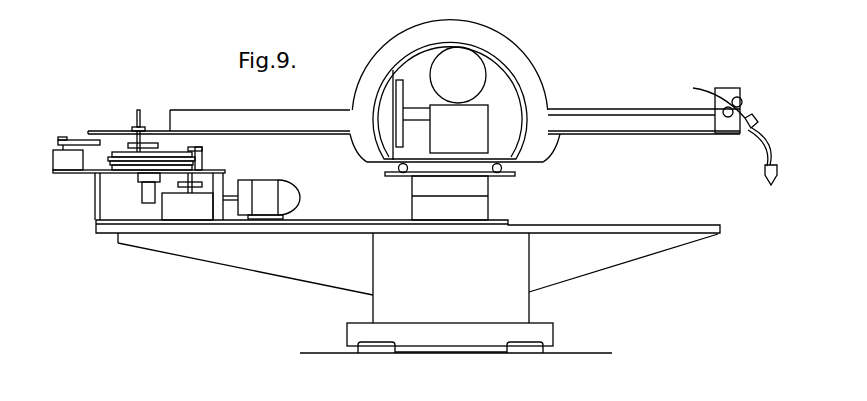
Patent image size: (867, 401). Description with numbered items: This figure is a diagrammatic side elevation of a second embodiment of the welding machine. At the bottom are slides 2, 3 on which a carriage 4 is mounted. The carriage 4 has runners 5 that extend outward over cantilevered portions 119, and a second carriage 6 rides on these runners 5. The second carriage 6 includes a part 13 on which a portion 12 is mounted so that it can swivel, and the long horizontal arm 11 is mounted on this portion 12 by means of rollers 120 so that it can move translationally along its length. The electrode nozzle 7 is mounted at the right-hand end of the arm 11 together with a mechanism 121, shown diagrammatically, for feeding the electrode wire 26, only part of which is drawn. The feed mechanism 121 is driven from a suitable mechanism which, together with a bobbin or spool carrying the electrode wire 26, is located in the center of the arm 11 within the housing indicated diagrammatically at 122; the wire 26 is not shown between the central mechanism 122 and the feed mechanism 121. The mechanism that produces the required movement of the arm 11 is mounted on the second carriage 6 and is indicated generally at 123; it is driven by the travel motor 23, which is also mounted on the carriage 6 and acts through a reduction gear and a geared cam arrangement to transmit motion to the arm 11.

The slide 2 is at (373, 352).
The slide 3 is at (522, 351).
The carriage 4 is at (523, 303).
The runners 5 is at (597, 225).
The second carriage 6 is at (111, 229).
The electrode nozzle 7 is at (760, 143).
The arm 11 is at (650, 134).
The portion 12 is at (414, 193).
The part of the carriage 13 is at (486, 205).
The travel motor 23 is at (273, 183).
The electrode wire 26 is at (698, 88).
The cantilevered portions 119 is at (192, 253).
The rollers 120 is at (398, 169).
The feed mechanism 121 is at (771, 100).
The drive mechanism and spool 122 is at (513, 124).
The arm-moving mechanism 123 is at (260, 170).